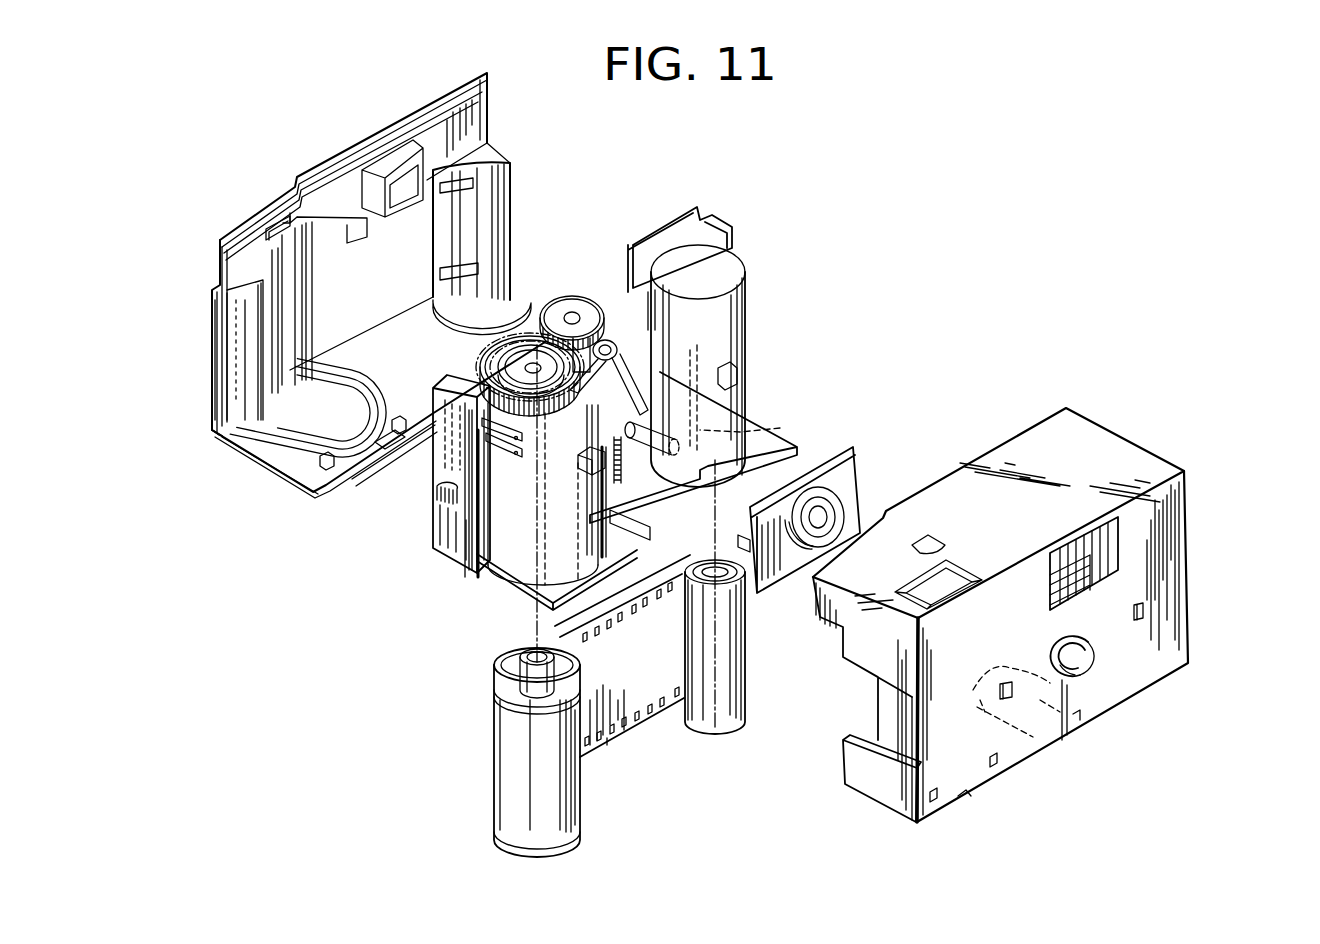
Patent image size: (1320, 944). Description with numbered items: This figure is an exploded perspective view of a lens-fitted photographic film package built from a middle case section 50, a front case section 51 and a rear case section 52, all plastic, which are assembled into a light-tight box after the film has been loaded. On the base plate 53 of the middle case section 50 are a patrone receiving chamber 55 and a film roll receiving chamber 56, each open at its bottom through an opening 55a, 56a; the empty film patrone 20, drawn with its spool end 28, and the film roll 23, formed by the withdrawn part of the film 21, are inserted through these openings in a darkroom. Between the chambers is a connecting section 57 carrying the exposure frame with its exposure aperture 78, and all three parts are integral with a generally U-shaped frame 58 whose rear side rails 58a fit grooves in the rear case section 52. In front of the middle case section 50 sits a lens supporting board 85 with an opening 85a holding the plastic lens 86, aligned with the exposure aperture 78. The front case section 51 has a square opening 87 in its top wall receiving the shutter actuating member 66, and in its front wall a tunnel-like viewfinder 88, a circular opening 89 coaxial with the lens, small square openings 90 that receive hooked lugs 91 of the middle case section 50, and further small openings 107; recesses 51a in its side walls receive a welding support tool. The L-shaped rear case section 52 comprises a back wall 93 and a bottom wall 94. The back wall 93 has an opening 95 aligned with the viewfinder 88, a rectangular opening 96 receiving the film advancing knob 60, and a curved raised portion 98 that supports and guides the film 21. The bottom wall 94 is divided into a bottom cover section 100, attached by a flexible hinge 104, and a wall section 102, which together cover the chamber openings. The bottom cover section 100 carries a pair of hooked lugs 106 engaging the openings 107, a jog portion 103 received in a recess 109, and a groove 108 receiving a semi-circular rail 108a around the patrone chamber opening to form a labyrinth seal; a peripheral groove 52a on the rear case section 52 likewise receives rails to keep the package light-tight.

The film patrone 20 is at (512, 795).
The film 21 is at (633, 740).
The film roll 23 is at (718, 717).
The cartridge spool 28 is at (517, 653).
The middle case section 50 is at (438, 594).
The front case section 51 is at (1205, 612).
The recesses 51a is at (848, 740).
The rear case section 52 is at (355, 299).
The groove 52a is at (440, 103).
The base plate 53 is at (533, 582).
The patrone receiving chamber 55 is at (510, 550).
The opening 55a is at (592, 646).
The film roll receiving chamber 56 is at (747, 392).
The opening 56a is at (780, 428).
The connecting section 57 is at (645, 300).
The U-shaped frame 58 is at (433, 533).
The rails 58a is at (465, 473).
The film advancing knob 60 is at (490, 352).
The shutter actuating member 66 is at (953, 580).
The exposure aperture 78 is at (745, 350).
The lens supporting board 85 is at (850, 468).
The opening 85a is at (812, 545).
The plastic lens 86 is at (843, 515).
The square opening 87 is at (897, 610).
The tunnel-like viewfinder 88 is at (1117, 547).
The circular opening 89 is at (1085, 667).
The small square openings 90 is at (1140, 617).
The hooked lugs 91 is at (584, 472).
The back wall 93 is at (217, 383).
The bottom wall 94 is at (537, 293).
The opening 95 is at (397, 187).
The rectangular opening 96 is at (270, 230).
The raised portion 98 is at (423, 232).
The bottom cover section 100 is at (333, 430).
The wall section 102 is at (360, 350).
The jog portion 103 is at (383, 443).
The flexible hinge 104 is at (213, 430).
The hooked lugs 106 is at (397, 420).
The small square openings 107 is at (997, 763).
The groove 108 is at (360, 440).
The semi-circular rail 108a is at (453, 560).
The recess 109 is at (970, 790).